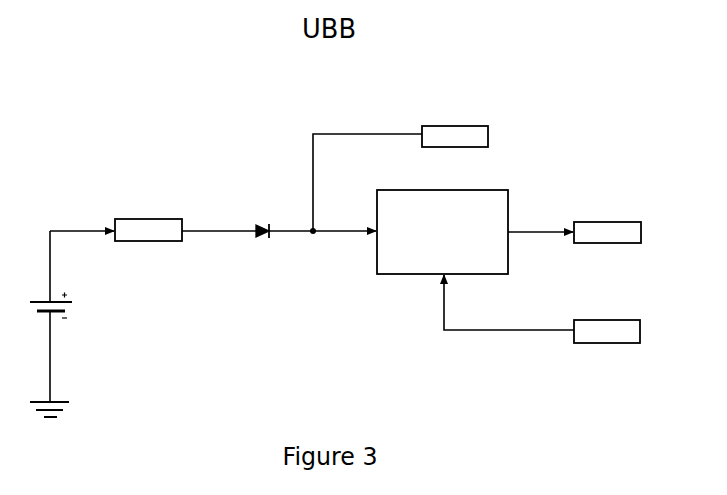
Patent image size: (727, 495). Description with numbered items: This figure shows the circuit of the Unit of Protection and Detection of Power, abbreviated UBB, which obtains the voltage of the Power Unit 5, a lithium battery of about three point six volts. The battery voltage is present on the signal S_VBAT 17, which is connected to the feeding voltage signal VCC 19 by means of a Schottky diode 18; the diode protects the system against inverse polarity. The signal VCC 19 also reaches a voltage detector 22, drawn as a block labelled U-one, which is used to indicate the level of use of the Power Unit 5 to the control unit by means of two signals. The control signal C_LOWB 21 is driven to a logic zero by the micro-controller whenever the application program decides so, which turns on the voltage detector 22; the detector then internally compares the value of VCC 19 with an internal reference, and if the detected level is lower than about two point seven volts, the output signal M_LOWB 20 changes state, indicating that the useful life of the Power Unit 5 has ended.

The Power Unit (BAT) 5 is at (108, 308).
The signal S_VBAT 17 is at (158, 206).
The Schottky diode 18 is at (265, 244).
The signal VCC 19 is at (502, 137).
The signal M_LOWB 20 is at (655, 233).
The signal C_LOWB 21 is at (628, 346).
The voltage detector 22 is at (421, 267).